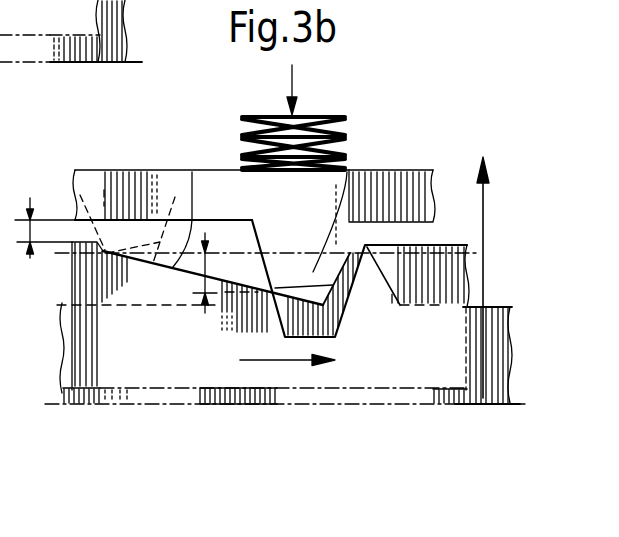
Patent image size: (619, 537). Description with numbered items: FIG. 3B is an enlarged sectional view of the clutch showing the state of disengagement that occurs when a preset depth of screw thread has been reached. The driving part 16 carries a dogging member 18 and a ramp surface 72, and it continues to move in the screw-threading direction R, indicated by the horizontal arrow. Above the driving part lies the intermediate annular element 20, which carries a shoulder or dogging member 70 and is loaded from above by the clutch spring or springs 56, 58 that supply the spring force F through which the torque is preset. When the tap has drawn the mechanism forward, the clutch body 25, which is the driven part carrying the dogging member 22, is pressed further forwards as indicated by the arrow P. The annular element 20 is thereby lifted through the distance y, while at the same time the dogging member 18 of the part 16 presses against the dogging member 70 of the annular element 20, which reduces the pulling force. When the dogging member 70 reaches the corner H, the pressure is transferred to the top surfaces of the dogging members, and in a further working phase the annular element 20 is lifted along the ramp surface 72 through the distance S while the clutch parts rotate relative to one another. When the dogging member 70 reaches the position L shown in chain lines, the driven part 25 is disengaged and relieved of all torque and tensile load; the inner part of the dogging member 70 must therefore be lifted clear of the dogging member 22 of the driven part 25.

The driving part 16 is at (95, 272).
The dogging member 18 is at (250, 296).
The intermediate annular element 20 is at (155, 185).
The dogging member 22 is at (17, 0).
The clutch body 25 is at (481, 400).
The clutch spring 56 is at (345, 117).
The clutch spring 58 is at (339, 133).
The dogging member 70 is at (345, 170).
The ramp surface 72 is at (192, 170).
The spring force F is at (292, 76).
The arrow indicating forward pressing P is at (486, 196).
The chain line position L is at (472, 250).
The corner H is at (278, 285).
The distance S is at (208, 273).
The screw-threading direction R is at (268, 363).
The distance y is at (39, 228).